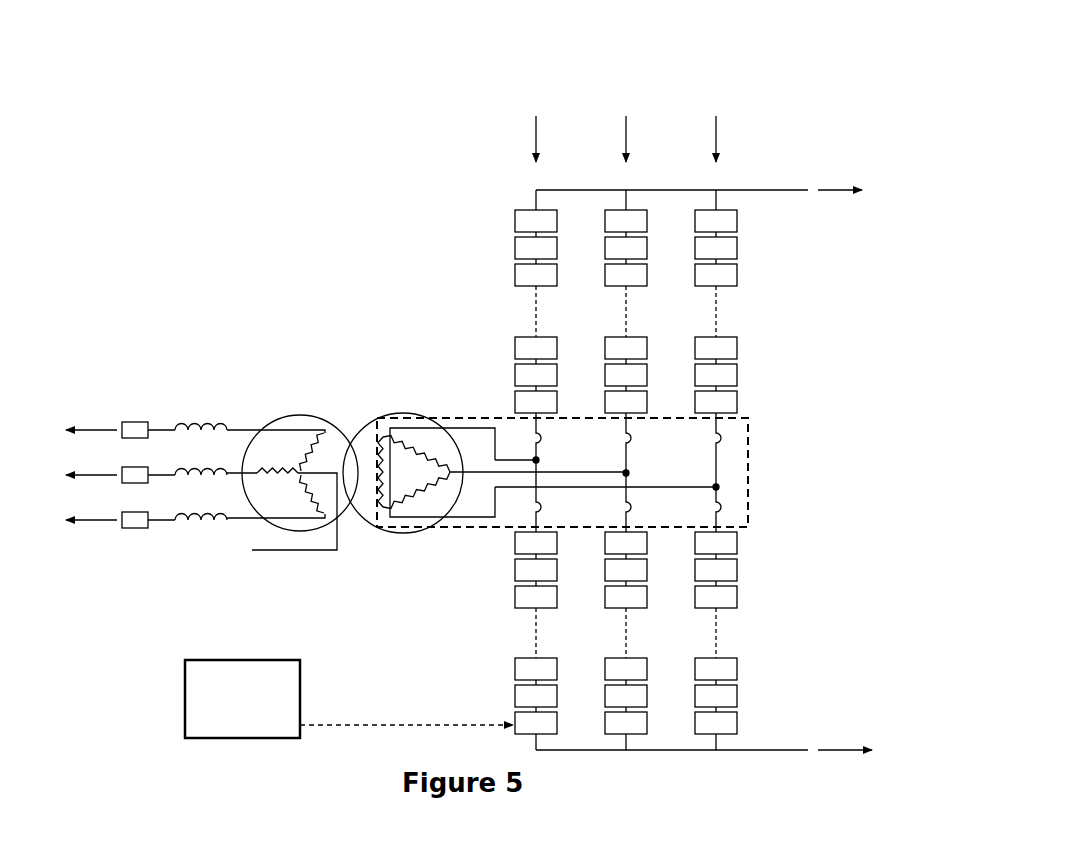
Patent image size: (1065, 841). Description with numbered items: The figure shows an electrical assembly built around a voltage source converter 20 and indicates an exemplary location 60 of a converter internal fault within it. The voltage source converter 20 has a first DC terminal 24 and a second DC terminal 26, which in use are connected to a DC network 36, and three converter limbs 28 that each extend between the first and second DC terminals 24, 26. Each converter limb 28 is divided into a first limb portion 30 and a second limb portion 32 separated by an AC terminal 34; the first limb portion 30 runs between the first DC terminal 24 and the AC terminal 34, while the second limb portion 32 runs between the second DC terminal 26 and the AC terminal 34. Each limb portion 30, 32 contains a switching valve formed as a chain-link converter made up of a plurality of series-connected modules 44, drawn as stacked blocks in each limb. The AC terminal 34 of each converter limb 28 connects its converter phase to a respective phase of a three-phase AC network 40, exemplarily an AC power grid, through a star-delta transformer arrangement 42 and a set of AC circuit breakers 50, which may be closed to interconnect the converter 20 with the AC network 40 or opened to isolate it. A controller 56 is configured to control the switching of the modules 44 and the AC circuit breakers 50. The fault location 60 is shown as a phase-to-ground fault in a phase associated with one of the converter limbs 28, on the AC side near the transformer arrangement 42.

The voltage source converter 20 is at (792, 124).
The first DC terminal 24 is at (725, 192).
The second DC terminal 26 is at (722, 750).
The converter limb 28 is at (626, 419).
The first limb portion 30 is at (649, 465).
The second limb portion 32 is at (754, 600).
The AC terminal 34 is at (538, 459).
The DC network 36 is at (861, 470).
The three-phase AC network 40 is at (73, 475).
The star-delta transformer arrangement 42 is at (352, 522).
The series-connected modules 44 is at (515, 222).
The AC circuit breaker 50 is at (134, 426).
The controller 56 is at (254, 711).
The location of converter internal fault 60 is at (742, 445).